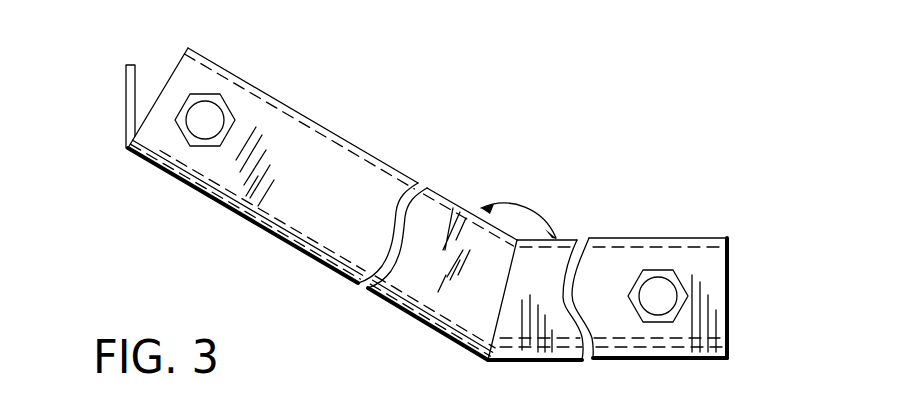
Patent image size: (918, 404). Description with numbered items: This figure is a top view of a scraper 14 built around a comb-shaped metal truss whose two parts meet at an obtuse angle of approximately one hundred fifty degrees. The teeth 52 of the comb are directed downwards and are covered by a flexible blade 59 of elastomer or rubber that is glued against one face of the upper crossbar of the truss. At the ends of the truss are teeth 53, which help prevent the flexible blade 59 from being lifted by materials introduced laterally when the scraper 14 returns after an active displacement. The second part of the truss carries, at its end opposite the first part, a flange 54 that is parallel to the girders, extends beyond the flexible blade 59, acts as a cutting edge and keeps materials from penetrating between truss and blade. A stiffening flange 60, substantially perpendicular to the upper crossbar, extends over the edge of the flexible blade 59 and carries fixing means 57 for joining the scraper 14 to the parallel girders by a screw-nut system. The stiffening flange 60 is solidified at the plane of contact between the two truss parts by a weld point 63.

The scraper 14 is at (417, 211).
The teeth 52 is at (434, 322).
The teeth 53 is at (137, 160).
The flange 54 is at (129, 97).
The fixing means 57 is at (210, 112).
The flexible blade 59 is at (317, 241).
The stiffening flange 60 is at (308, 163).
The weld point 63 is at (516, 236).